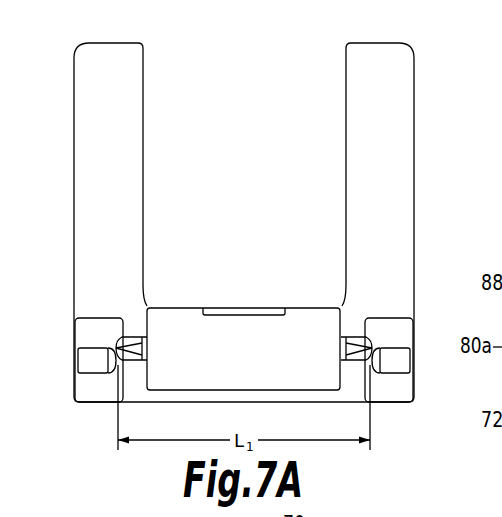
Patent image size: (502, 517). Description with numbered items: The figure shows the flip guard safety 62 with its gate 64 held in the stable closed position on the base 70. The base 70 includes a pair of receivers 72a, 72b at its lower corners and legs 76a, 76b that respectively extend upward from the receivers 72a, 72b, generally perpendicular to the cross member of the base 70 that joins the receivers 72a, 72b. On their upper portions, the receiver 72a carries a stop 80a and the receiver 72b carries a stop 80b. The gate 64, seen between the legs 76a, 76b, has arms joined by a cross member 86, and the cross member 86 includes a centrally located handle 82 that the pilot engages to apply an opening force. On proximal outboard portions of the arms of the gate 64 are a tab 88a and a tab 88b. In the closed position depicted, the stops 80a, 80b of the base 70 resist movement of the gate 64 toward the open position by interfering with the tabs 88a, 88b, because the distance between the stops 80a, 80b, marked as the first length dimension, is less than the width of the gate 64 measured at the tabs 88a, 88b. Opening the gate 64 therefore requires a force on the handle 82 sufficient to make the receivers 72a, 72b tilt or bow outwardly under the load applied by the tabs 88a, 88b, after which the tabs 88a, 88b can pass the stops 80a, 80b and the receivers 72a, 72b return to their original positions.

The flip guard safety 62 is at (420, 72).
The base 70 is at (82, 126).
The leg 76a is at (136, 98).
The leg 76b is at (352, 98).
The gate 64 is at (188, 307).
The handle 82 is at (245, 309).
The cross member 86 is at (302, 322).
The receiver 72a is at (93, 393).
The receiver 72b is at (395, 393).
The stop 80a is at (87, 360).
The stop 80b is at (402, 360).
The tab 88a is at (130, 336).
The tab 88b is at (358, 337).